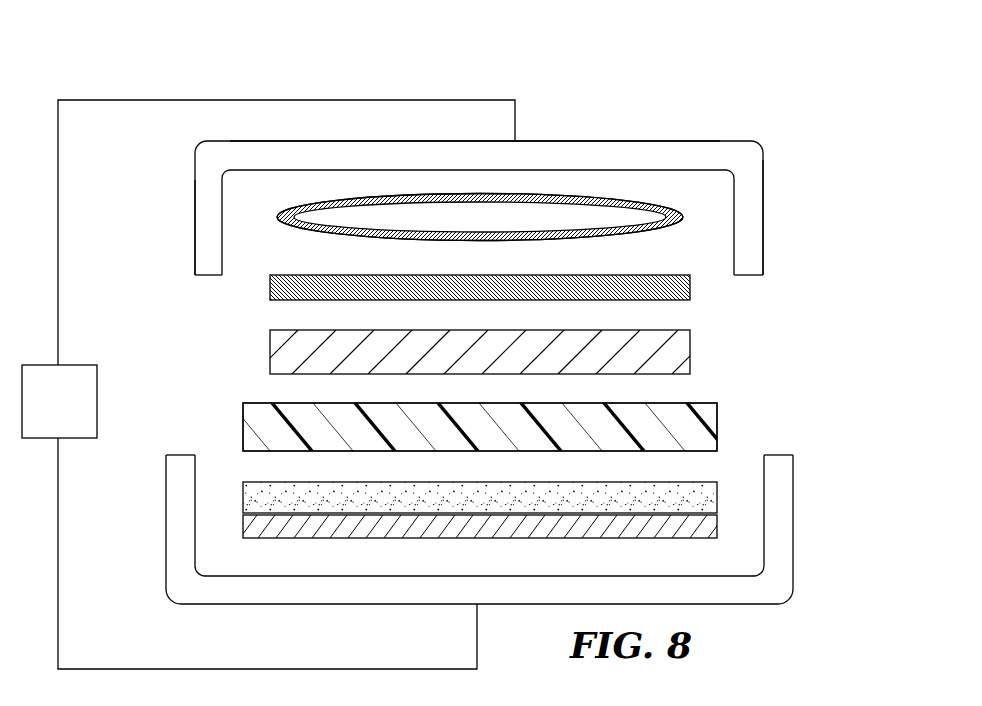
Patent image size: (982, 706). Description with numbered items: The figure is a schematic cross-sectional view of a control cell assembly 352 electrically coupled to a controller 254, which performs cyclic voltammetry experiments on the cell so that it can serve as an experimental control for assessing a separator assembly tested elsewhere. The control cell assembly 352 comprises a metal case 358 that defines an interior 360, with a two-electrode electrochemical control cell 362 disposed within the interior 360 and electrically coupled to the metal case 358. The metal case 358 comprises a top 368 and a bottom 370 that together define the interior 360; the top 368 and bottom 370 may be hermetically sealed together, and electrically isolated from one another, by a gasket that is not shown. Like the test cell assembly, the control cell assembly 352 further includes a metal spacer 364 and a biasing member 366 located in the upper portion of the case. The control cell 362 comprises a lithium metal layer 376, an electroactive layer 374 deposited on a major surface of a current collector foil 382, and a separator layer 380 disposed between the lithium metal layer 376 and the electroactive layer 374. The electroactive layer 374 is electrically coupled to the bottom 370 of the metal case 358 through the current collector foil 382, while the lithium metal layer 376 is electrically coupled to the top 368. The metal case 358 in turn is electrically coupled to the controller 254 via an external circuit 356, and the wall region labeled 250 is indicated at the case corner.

The housing wall 250 is at (760, 155).
The controller 254 is at (59, 401).
The control cell assembly 352 is at (562, 141).
The external circuit 356 is at (130, 100).
The metal case 358 is at (195, 221).
The interior 360 is at (263, 213).
The control cell 362 is at (226, 420).
The metal spacer 364 is at (690, 288).
The biasing member 366 is at (682, 219).
The top 368 is at (660, 141).
The bottom 370 is at (793, 577).
The electroactive layer 374 is at (717, 497).
The lithium metal layer 376 is at (690, 356).
The separator layer 380 is at (717, 419).
The current collector foil 382 is at (243, 527).